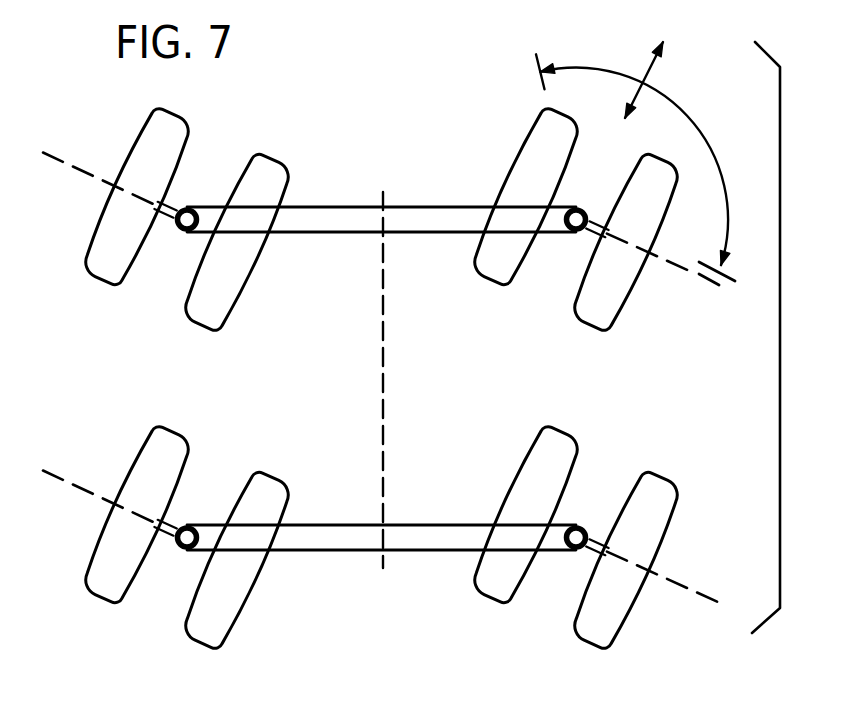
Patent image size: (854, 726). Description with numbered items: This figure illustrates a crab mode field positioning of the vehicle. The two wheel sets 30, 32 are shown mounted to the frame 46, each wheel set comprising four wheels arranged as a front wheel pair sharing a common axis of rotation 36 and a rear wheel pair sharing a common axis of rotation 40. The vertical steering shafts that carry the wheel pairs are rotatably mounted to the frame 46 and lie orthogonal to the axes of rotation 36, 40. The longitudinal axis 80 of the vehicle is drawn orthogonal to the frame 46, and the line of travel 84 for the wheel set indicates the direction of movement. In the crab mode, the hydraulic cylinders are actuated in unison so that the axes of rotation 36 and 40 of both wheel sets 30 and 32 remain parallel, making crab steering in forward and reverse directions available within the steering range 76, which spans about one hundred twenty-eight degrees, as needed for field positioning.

The wheel set 30 is at (322, 598).
The wheel set 32 is at (307, 152).
The axis of rotation 36 is at (63, 157).
The axis of rotation 40 is at (677, 268).
The frame 46 is at (290, 233).
The steering range 76 is at (696, 122).
The longitudinal axis 80 is at (381, 393).
The line of travel 84 is at (648, 74).